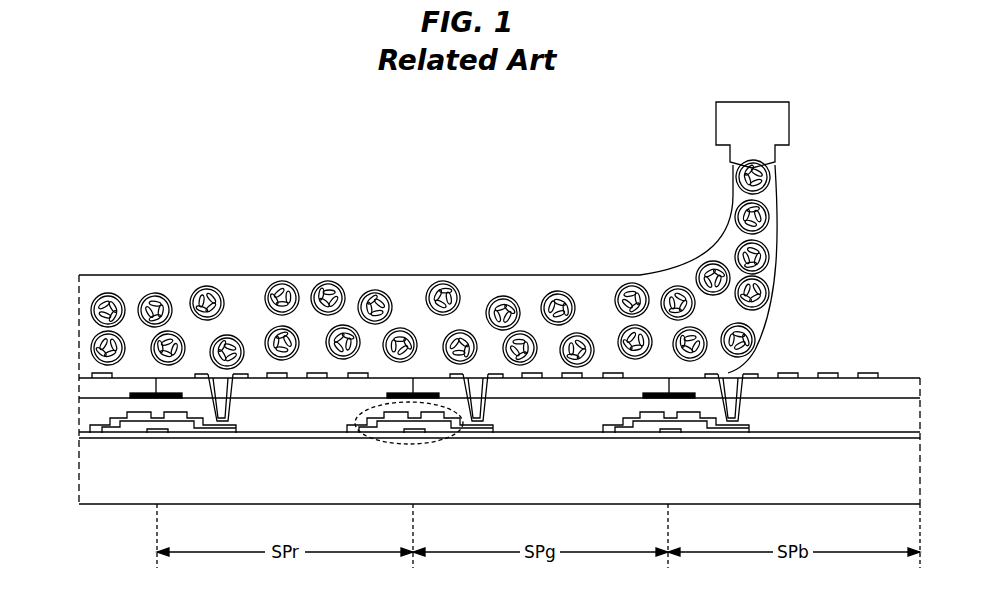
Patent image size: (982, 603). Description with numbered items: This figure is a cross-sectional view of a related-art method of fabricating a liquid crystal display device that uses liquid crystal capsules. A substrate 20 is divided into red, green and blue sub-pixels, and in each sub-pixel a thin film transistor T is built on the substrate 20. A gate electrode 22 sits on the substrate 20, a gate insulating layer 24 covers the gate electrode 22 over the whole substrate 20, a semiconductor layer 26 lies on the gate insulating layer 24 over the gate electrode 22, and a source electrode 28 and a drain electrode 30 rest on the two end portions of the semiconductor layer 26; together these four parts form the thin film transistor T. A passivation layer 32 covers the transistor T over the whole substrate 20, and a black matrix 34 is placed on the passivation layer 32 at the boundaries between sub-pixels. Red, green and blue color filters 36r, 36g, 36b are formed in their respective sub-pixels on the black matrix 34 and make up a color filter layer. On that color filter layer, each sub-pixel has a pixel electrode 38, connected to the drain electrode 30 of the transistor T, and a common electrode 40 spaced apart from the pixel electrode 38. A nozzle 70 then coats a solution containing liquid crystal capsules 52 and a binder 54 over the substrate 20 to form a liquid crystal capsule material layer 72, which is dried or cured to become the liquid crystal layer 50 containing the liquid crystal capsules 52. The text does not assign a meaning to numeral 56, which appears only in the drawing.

The substrate 20 is at (862, 479).
The gate electrode 22 is at (410, 434).
The gate insulating layer 24 is at (512, 436).
The semiconductor layer 26 is at (383, 434).
The source electrode 28 is at (355, 434).
The drain electrode 30 is at (472, 428).
The passivation layer 32 is at (550, 424).
The black matrix 34 is at (173, 401).
The red color filter 36r is at (307, 394).
The green color filter 36g is at (578, 393).
The blue color filter 36b is at (773, 389).
The pixel electrode 38 is at (240, 381).
The common electrode 40 is at (283, 381).
The liquid crystal layer 50 is at (438, 267).
The liquid crystal capsule 52 is at (773, 287).
The binder 54 is at (775, 253).
The solvent 56 is at (753, 332).
The nozzle 70 is at (791, 122).
The liquid crystal capsule material layer 72 is at (458, 274).
The thin film transistor T is at (419, 467).